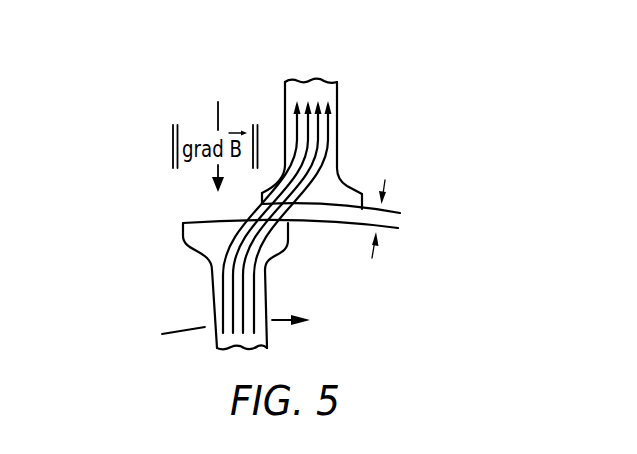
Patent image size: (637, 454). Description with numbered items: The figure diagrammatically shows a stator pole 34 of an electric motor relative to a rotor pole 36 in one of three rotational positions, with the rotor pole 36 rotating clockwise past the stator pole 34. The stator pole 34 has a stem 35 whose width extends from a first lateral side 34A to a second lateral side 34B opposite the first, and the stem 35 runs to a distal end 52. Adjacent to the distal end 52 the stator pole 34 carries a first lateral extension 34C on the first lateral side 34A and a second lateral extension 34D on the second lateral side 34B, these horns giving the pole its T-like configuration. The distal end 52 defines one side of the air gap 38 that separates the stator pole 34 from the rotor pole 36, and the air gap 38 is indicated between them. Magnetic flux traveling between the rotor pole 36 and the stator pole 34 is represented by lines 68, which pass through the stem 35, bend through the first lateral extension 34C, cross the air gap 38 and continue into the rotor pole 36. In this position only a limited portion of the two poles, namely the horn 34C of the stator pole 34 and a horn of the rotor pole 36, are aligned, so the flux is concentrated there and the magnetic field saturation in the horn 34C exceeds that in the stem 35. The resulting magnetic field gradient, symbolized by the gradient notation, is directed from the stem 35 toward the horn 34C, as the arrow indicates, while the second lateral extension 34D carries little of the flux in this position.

The stator pole 34 is at (402, 122).
The first lateral side 34A is at (283, 93).
The second lateral side 34B is at (339, 82).
The first lateral extension 34C is at (258, 196).
The second lateral extension 34D is at (362, 193).
The stem 35 is at (340, 122).
The rotor pole 36 is at (138, 317).
The air gap 38 is at (372, 257).
The distal end 52 is at (328, 226).
The magnetic flux lines 68 is at (228, 243).